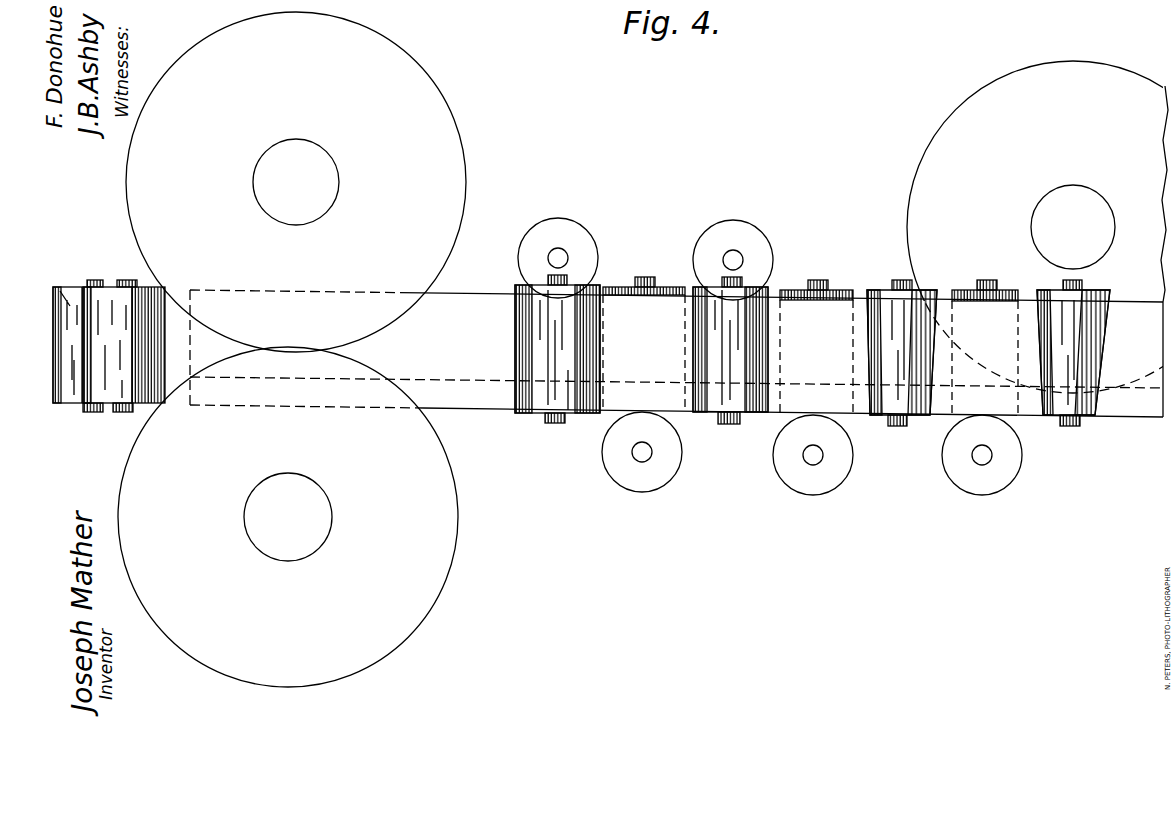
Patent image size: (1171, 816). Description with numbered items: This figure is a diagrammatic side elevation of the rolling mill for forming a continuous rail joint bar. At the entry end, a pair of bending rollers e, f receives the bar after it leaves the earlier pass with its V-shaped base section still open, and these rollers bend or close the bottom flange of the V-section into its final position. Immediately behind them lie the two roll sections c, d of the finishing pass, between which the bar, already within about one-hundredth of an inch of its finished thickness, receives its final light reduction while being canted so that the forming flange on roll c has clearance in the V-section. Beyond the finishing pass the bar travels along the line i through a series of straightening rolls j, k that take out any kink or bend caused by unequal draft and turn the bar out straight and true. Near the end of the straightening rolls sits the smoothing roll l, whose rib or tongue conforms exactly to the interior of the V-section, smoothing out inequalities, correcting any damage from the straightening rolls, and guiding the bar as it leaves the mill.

The roll section of the finishing pass c is at (460, 155).
The roll section of the finishing pass d is at (445, 560).
The bending roller e is at (65, 291).
The bending roller f is at (115, 300).
The belt or apron i is at (468, 293).
The straightening roll j is at (588, 240).
The straightening roll k is at (582, 297).
The smoothing roll l is at (920, 165).